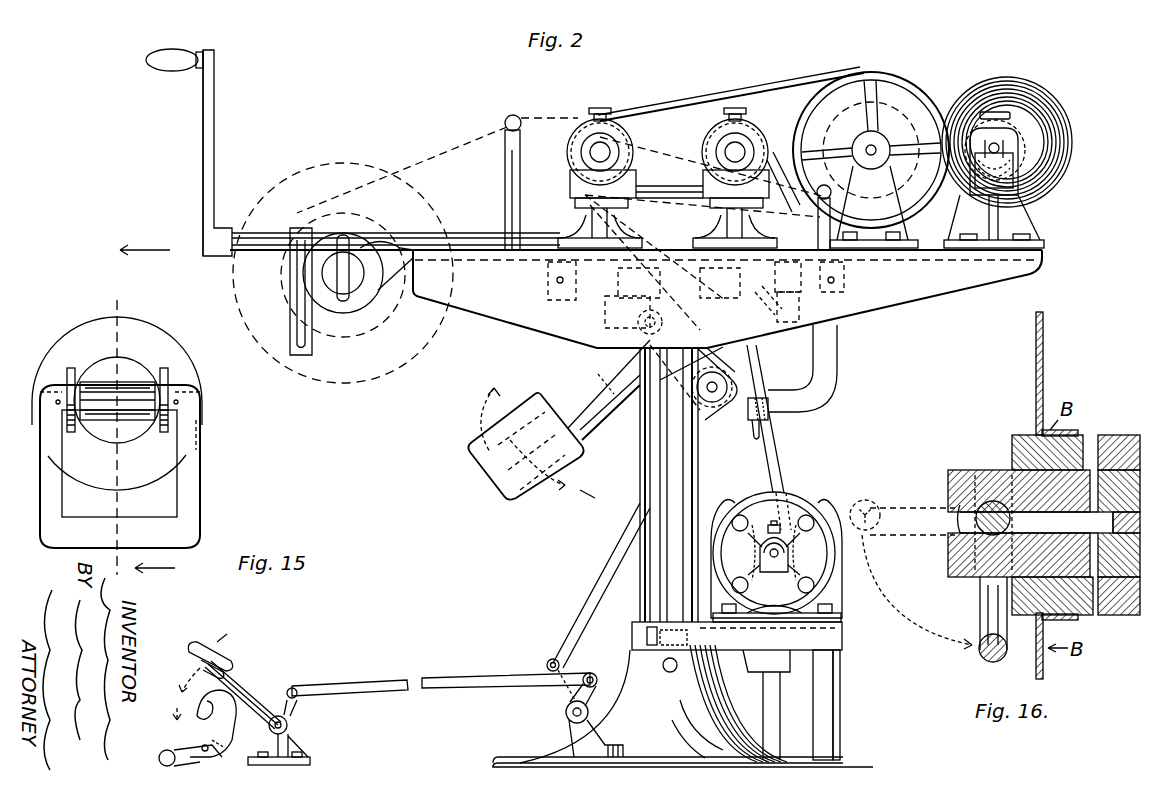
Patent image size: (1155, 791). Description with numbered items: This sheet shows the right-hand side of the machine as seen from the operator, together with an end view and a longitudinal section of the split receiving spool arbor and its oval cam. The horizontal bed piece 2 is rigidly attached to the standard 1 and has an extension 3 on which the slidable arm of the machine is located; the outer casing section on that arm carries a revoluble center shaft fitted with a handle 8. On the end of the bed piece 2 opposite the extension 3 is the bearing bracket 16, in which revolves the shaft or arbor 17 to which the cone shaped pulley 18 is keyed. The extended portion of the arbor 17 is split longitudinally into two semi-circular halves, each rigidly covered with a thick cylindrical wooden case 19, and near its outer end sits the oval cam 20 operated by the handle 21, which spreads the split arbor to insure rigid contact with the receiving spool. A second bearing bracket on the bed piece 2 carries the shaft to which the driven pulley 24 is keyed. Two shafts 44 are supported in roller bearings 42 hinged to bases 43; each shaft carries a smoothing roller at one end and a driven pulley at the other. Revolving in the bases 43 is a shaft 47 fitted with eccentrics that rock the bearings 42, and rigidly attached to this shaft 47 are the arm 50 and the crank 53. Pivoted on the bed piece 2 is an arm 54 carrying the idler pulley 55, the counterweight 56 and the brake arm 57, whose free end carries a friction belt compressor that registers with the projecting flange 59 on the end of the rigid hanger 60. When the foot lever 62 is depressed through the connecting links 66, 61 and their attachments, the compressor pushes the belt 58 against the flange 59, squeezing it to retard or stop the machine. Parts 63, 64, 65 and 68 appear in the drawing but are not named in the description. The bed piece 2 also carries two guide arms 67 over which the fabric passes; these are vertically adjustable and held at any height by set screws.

In FIG. 2, the standard 1 is at (640, 603).
In FIG. 2, the horizontal bed piece 2 is at (636, 271).
In FIG. 2, the extension 3 is at (343, 268).
In FIG. 2, the handle 8 is at (362, 300).
In FIG. 2, the bearing bracket 16 is at (1012, 222).
In FIG. 2, the shaft or arbor 17 is at (1048, 99).
In FIG. 15, the shaft or arbor 17 is at (120, 402).
In FIG. 16, the shaft or arbor 17 is at (948, 480).
In FIG. 2, the cone shaped pulley 18 is at (1004, 80).
In FIG. 15, the cylindrical wooden case 19 is at (117, 403).
In FIG. 16, the cylindrical wooden case 19 is at (1022, 438).
In FIG. 15, the oval cam 20 is at (117, 400).
In FIG. 16, the oval cam 20 is at (960, 520).
In FIG. 15, the handle 21 is at (120, 466).
In FIG. 16, the handle 21 is at (975, 657).
In FIG. 2, the driven pulley 24 is at (882, 80).
In FIG. 2, the roller bearings 42 is at (570, 185).
In FIG. 2, the bases 43 is at (578, 216).
In FIG. 2, the shafts 44 is at (575, 153).
In FIG. 2, the shaft 47 is at (477, 233).
In FIG. 2, the arm 50 is at (290, 268).
In FIG. 2, the crank 53 is at (214, 154).
In FIG. 2, the arm 54 is at (634, 390).
In FIG. 2, the idler pulley 55 is at (730, 395).
In FIG. 2, the counterweight 56 is at (542, 444).
In FIG. 2, the brake arm 57 is at (762, 295).
In FIG. 2, the belt 58 is at (785, 455).
In FIG. 2, the projecting flange 59 is at (752, 428).
In FIG. 2, the rigid hanger 60 is at (837, 382).
In FIG. 2, the connecting link 61 is at (600, 580).
In FIG. 2, the foot lever 62 is at (248, 688).
In FIG. 2, the bracket 63 is at (592, 683).
In FIG. 2, the link 64 is at (560, 692).
In FIG. 2, the pivot 65 is at (566, 724).
In FIG. 2, the connecting link 66 is at (460, 678).
In FIG. 2, the guide arms 67 is at (518, 115).
In FIG. 2, the motor 68 is at (793, 512).